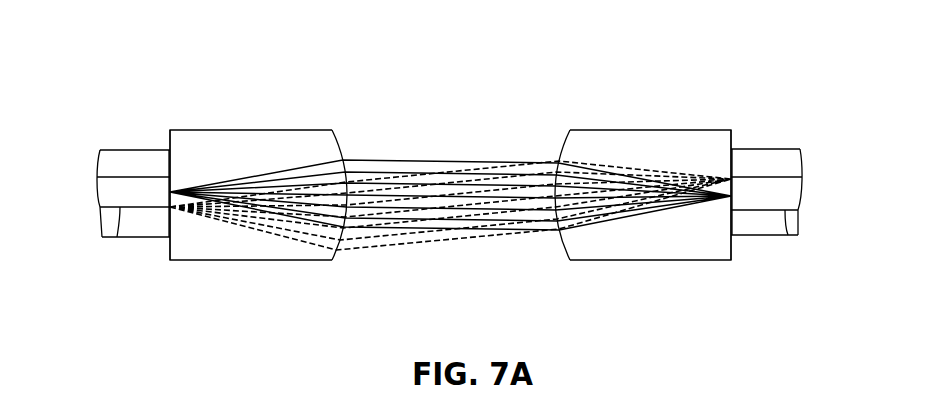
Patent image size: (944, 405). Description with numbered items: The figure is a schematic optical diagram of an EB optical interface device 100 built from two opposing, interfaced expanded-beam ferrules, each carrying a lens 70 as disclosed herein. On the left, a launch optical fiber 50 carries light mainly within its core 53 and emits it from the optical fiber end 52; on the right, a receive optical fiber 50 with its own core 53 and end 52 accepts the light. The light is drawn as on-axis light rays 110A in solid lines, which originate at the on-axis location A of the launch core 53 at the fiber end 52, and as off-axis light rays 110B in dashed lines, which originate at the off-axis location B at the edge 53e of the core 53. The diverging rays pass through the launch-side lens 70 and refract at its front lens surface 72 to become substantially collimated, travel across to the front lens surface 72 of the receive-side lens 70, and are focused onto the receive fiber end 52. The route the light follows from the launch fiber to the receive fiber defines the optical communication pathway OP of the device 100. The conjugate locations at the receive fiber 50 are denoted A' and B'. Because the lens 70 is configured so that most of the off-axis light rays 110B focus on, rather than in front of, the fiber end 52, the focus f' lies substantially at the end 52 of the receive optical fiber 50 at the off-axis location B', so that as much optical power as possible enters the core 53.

The EB optical interface device 100 is at (168, 53).
The optical fiber 50 is at (113, 133).
The optical fiber end 52 is at (170, 136).
The core 53 is at (117, 235).
The edge of core 53e is at (168, 208).
The lens 70 is at (251, 130).
The front lens surface 72 is at (336, 141).
The on-axis light rays 110A is at (377, 158).
The off-axis light rays 110B is at (380, 254).
The optical communication pathway OP is at (470, 152).
The on-axis location A is at (197, 165).
The off-axis location B is at (195, 233).
The conjugate on-axis location A' is at (702, 225).
The conjugate off-axis location B' is at (703, 157).
The focus f' is at (708, 139).